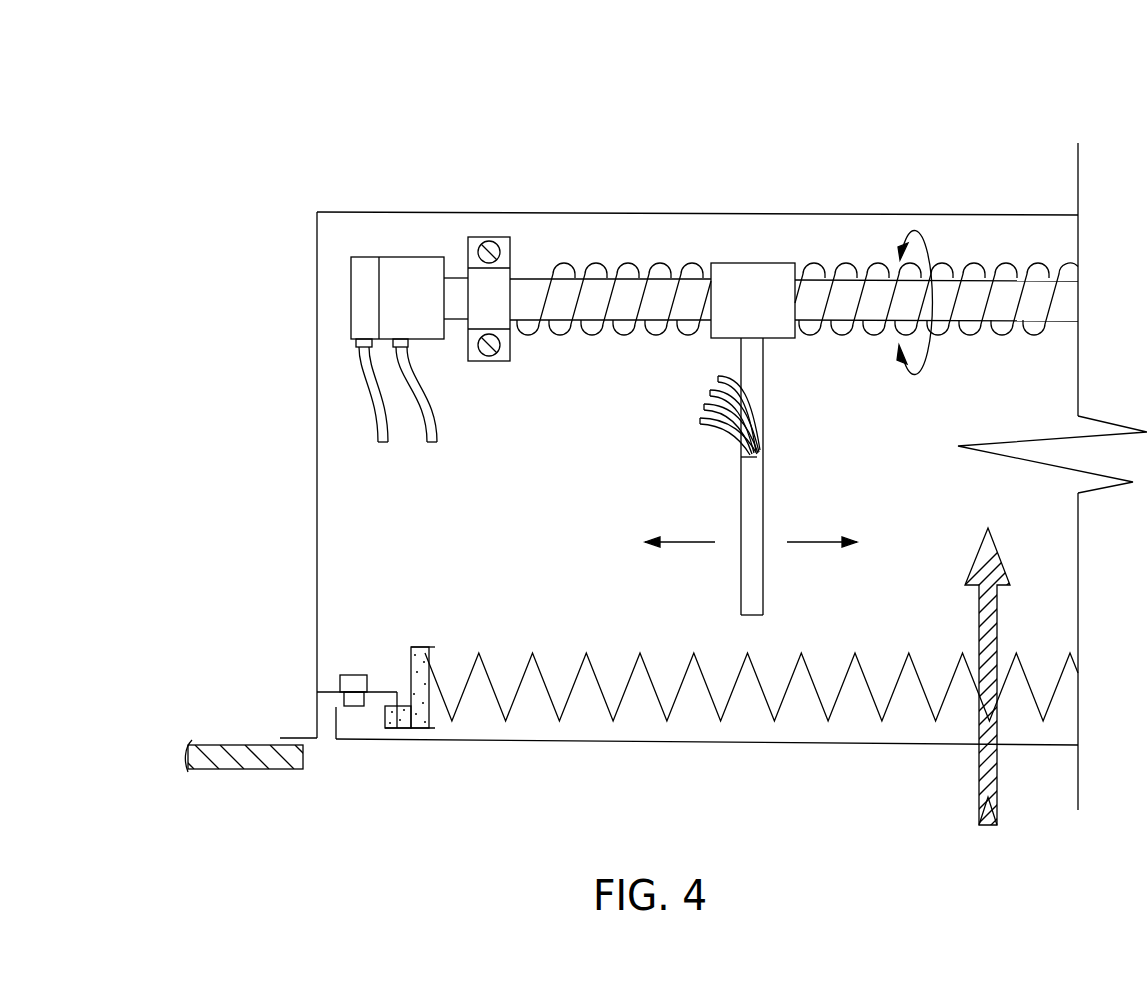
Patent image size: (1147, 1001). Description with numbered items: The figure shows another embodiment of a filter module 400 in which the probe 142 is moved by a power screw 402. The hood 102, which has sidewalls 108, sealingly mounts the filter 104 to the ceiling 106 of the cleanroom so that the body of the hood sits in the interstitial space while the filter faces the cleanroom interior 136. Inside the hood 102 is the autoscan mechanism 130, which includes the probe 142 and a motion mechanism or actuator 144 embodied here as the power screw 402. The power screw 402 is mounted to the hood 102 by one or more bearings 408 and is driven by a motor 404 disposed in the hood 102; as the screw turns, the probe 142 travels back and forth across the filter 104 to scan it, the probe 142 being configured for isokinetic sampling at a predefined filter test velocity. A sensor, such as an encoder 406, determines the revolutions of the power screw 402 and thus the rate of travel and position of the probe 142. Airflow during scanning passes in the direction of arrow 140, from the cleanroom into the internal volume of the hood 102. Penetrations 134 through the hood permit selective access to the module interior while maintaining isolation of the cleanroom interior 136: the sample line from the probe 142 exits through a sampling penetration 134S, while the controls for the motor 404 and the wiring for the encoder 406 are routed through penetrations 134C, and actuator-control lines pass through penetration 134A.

The filter module 400 is at (536, 110).
The hood 102 is at (317, 250).
The sidewall 108 is at (317, 512).
The motor 404 is at (414, 270).
The encoder 406 is at (358, 302).
The bearing 408 is at (485, 237).
The autoscan mechanism 130 is at (753, 243).
The actuator 144 is at (531, 260).
The power screw 402 is at (612, 268).
The probe 142 is at (763, 524).
The sampling penetration 134S is at (690, 435).
The positional information penetration 134C is at (362, 430).
The actuator control penetration 134A is at (450, 419).
The penetration 134 is at (341, 654).
The cleanroom interior 136 is at (458, 841).
The filter 104 is at (646, 710).
The airflow direction arrow 140 is at (981, 763).
The ceiling 106 is at (248, 745).